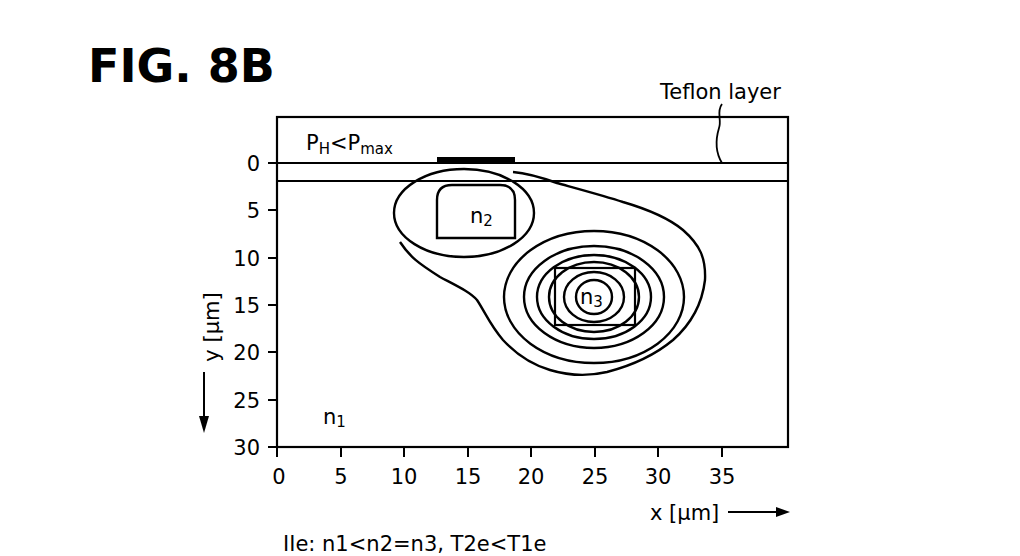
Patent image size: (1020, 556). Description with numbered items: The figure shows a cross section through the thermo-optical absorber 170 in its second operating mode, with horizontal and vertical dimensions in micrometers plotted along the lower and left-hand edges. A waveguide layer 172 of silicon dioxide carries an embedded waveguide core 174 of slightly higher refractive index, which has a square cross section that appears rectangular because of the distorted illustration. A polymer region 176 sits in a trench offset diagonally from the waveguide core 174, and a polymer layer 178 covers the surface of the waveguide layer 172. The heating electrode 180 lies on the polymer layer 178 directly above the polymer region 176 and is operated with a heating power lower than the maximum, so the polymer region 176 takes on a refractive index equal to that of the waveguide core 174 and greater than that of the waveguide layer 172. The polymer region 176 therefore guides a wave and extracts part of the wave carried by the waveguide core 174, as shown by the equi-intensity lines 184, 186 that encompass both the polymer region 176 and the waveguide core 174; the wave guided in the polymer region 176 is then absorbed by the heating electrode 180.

The thermo-optical absorber 170 is at (205, 228).
The waveguide layer 172 is at (359, 335).
The waveguide core 174 is at (636, 288).
The polymer region 176 is at (435, 219).
The polymer layer 178 is at (630, 161).
The heating electrode 180 is at (505, 158).
The equi-intensity line 184 is at (463, 252).
The equi-intensity line 186 is at (677, 344).